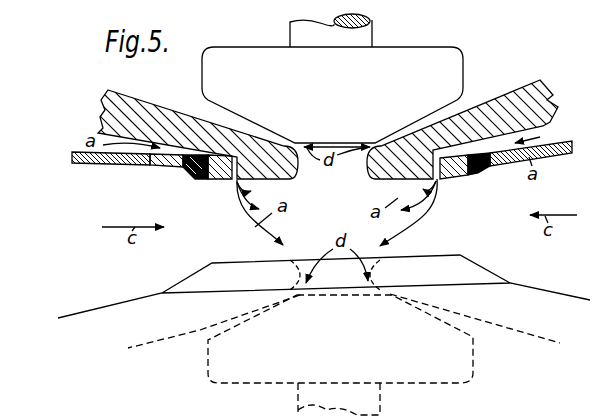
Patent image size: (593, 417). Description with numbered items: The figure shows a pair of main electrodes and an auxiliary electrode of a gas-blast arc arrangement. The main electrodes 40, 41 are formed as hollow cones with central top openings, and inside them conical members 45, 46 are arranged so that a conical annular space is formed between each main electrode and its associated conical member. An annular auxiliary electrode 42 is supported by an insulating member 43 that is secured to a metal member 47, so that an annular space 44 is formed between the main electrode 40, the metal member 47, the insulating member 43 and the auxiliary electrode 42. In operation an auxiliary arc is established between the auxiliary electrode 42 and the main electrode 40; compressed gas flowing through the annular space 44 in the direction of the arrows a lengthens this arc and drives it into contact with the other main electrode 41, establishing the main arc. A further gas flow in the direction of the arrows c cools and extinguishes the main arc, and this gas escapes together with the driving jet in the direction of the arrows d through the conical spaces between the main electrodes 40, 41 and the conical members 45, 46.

The main electrode 40 is at (140, 100).
The main electrode 41 is at (523, 297).
The auxiliary electrode 42 is at (222, 181).
The insulating member 43 is at (193, 170).
The annular space 44 is at (173, 153).
The conical member 45 is at (385, 47).
The conical member 46 is at (447, 380).
The metal member 47 is at (88, 164).